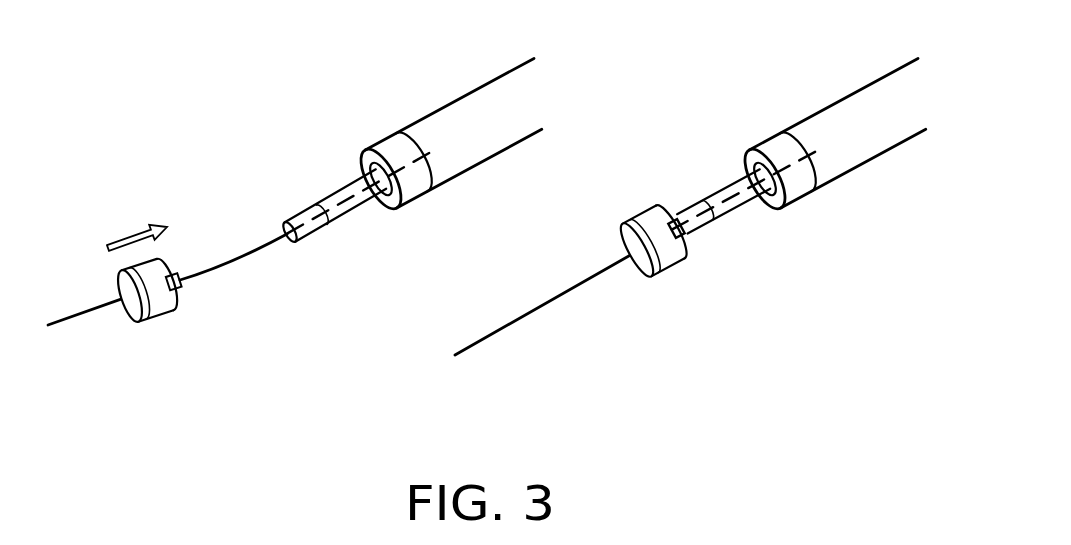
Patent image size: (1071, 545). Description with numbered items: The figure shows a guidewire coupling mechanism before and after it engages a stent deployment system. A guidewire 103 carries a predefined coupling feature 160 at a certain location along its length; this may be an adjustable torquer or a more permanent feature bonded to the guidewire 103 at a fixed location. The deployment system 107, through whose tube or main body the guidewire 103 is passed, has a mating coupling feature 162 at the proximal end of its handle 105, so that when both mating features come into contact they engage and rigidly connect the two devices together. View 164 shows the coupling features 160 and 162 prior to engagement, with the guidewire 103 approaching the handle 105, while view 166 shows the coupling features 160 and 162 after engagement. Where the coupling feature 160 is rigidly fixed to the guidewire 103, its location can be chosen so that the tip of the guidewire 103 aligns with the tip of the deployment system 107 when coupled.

The guidewire 103 is at (86, 322).
The handle 105 is at (417, 210).
The deployment system 107 is at (414, 106).
The coupling feature 160 is at (172, 322).
The coupling feature 162 is at (297, 200).
The view 164 is at (191, 88).
The view 166 is at (648, 88).